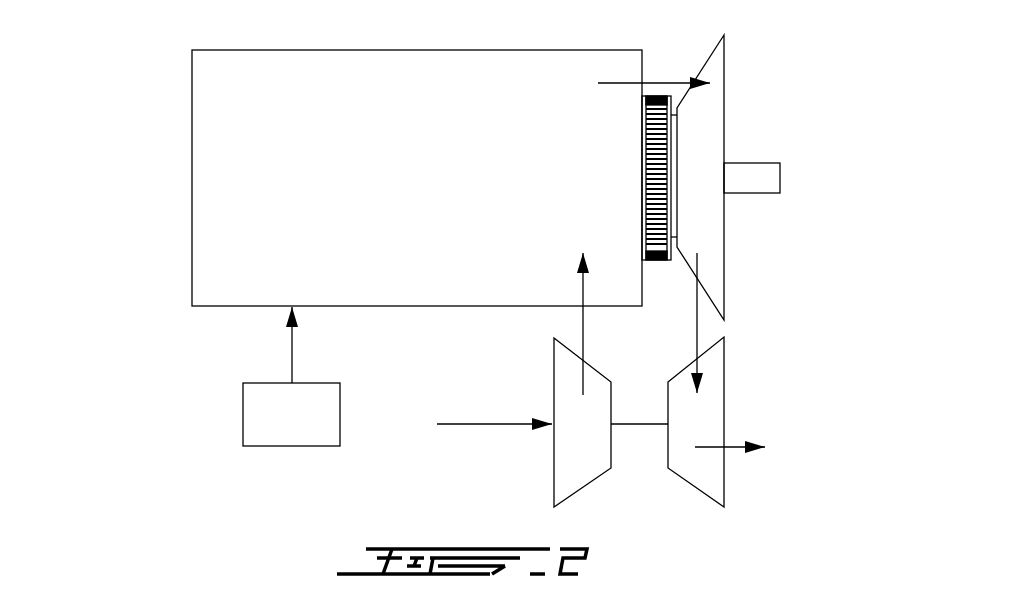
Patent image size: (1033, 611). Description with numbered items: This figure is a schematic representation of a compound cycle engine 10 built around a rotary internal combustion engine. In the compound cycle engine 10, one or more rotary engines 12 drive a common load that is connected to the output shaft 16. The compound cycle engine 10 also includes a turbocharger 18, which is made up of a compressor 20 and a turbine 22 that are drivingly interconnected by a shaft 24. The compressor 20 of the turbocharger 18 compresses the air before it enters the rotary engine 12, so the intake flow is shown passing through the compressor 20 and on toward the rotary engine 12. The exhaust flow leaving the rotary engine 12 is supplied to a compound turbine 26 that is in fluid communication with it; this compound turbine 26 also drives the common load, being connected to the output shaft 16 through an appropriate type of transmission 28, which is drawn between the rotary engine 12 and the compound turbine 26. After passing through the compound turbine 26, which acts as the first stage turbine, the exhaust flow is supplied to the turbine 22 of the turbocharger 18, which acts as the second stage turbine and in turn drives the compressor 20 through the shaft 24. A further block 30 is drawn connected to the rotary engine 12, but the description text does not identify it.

The compound cycle engine 10 is at (125, 99).
The rotary engine 12 is at (323, 87).
The output shaft 16 is at (760, 177).
The turbocharger 18 is at (642, 488).
The compressor 20 is at (552, 460).
The turbine 22 is at (703, 425).
The shaft 24 is at (635, 424).
The compound turbine 26 is at (713, 157).
The transmission 28 is at (655, 152).
The controller 30 is at (288, 432).